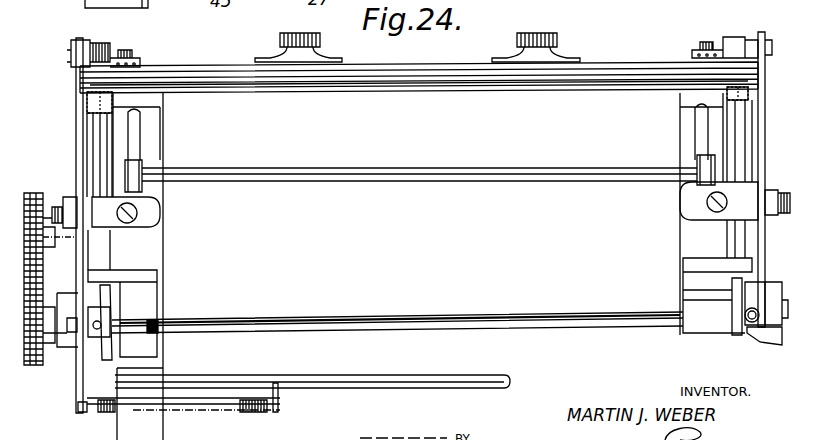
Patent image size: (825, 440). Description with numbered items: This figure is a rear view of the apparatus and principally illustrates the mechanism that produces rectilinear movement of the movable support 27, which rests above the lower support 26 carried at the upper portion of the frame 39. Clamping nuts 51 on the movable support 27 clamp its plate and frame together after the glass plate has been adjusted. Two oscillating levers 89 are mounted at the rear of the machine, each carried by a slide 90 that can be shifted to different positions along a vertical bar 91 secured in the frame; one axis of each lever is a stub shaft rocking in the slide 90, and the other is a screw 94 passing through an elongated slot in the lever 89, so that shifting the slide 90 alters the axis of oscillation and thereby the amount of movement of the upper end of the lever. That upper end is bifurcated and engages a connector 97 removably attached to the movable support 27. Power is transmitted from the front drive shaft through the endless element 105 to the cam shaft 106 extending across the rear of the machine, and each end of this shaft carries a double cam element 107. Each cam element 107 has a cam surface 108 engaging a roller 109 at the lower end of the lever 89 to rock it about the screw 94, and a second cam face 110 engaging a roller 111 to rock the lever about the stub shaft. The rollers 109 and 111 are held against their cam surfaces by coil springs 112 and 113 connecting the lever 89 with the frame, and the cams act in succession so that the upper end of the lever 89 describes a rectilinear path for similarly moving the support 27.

The lower support 26 is at (557, 85).
The movable support 27 is at (634, 54).
The frame 39 is at (678, 127).
The clamping nut 51 is at (270, 30).
The oscillating lever 89 is at (77, 113).
The slide 90 is at (135, 207).
The vertical bar 91 is at (95, 148).
The screw 94 is at (57, 205).
The connector 97 is at (115, 38).
The endless element 105 is at (44, 292).
The cam shaft 106 is at (422, 318).
The double cam element 107 is at (123, 330).
The cam surface 108 is at (795, 284).
The roller 109 is at (75, 332).
The second cam face 110 is at (100, 352).
The roller 111 is at (100, 322).
The coil spring 112 is at (79, 413).
The coil spring 113 is at (206, 398).